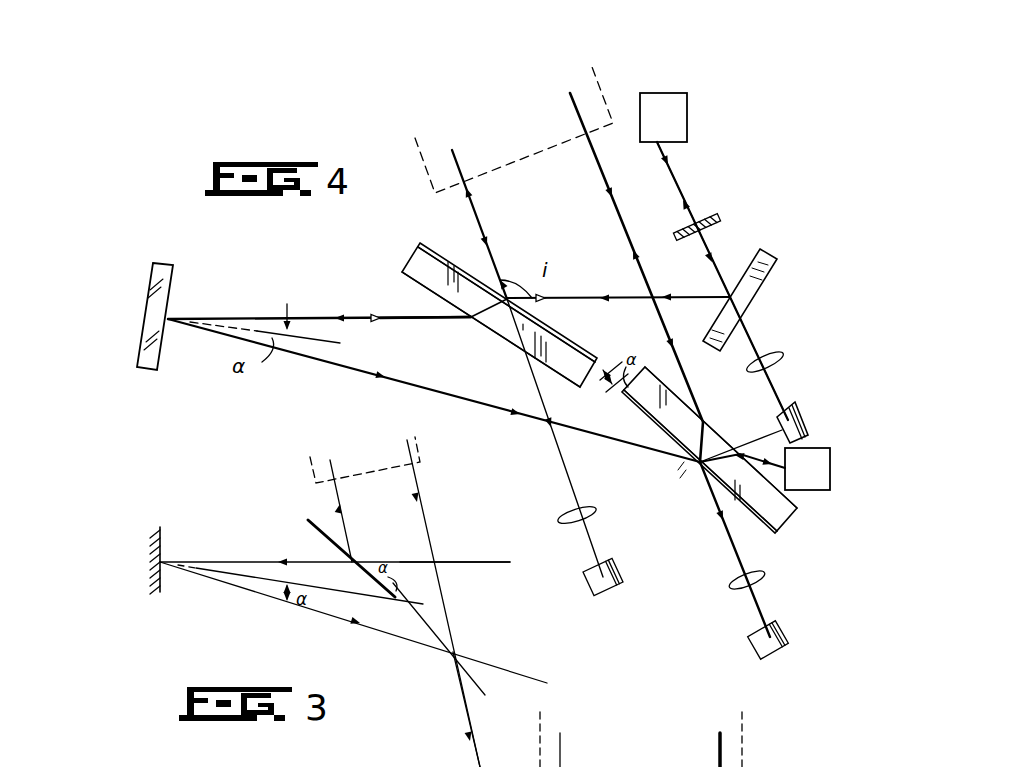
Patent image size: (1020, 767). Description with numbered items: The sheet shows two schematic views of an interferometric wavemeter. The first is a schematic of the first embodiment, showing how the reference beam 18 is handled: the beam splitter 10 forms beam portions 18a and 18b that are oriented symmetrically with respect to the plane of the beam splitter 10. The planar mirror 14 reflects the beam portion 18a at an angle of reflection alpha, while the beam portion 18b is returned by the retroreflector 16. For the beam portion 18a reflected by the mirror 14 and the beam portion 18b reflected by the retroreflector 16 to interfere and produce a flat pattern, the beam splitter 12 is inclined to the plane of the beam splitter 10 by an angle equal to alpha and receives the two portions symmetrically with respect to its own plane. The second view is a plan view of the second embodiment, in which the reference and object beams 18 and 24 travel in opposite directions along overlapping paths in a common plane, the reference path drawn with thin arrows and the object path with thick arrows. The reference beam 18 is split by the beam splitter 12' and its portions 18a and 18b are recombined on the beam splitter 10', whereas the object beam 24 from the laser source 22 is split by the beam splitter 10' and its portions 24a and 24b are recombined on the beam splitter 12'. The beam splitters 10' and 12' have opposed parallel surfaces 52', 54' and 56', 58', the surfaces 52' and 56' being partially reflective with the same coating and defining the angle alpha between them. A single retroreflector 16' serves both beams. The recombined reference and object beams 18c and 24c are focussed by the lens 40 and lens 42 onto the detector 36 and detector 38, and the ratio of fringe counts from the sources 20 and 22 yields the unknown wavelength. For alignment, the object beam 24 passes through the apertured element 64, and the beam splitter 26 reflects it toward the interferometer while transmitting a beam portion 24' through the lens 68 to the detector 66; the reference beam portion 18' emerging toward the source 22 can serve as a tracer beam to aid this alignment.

In FIG. 3, the beam splitter 10 is at (327, 555).
In FIG. 4, the beam splitter 10' is at (488, 291).
In FIG. 3, the beam splitter 12 is at (396, 607).
In FIG. 4, the beam splitter 12' is at (724, 472).
In FIG. 4, the planar mirror 14 is at (178, 284).
In FIG. 3, the planar mirror 14 is at (165, 531).
In FIG. 3, the retroreflector 16 is at (339, 445).
In FIG. 4, the retroreflector 16' is at (527, 123).
In FIG. 3, the retroreflector 16' is at (670, 735).
In FIG. 4, the laser beam 18 is at (797, 405).
In FIG. 3, the laser beam 18 is at (455, 548).
In FIG. 4, the reference beam portion 18' is at (699, 219).
In FIG. 4, the beam portion 18a is at (390, 314).
In FIG. 3, the beam portion 18a is at (256, 567).
In FIG. 4, the beam portion 18b is at (495, 259).
In FIG. 3, the beam portion 18b is at (345, 513).
In FIG. 4, the reference beam 18c is at (553, 467).
In FIG. 3, the reference beam 18c is at (475, 729).
In FIG. 4, the reference laser source 20 is at (822, 492).
In FIG. 4, the laser source 22 is at (672, 92).
In FIG. 4, the object beam 24 is at (703, 281).
In FIG. 4, the beam portion 24' is at (762, 358).
In FIG. 4, the beam portion 24a is at (355, 303).
In FIG. 4, the beam portion 24b is at (480, 225).
In FIG. 4, the object beam 24c is at (712, 506).
In FIG. 4, the beam splitter 26 is at (771, 251).
In FIG. 4, the detector 36 is at (585, 580).
In FIG. 4, the detector 38 is at (752, 641).
In FIG. 4, the lens 40 is at (560, 517).
In FIG. 4, the lens 42 is at (735, 576).
In FIG. 4, the partially reflective surface 52' is at (506, 283).
In FIG. 4, the surface 54' is at (491, 332).
In FIG. 4, the partially reflective surface 56' is at (688, 460).
In FIG. 4, the surface 58' is at (721, 437).
In FIG. 4, the apertured element 64 is at (718, 226).
In FIG. 4, the detector 66 is at (760, 421).
In FIG. 4, the lens 68 is at (748, 368).